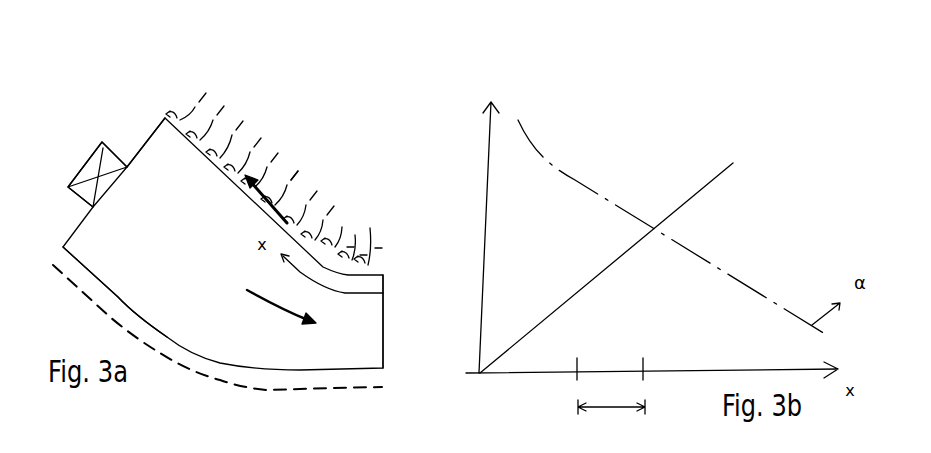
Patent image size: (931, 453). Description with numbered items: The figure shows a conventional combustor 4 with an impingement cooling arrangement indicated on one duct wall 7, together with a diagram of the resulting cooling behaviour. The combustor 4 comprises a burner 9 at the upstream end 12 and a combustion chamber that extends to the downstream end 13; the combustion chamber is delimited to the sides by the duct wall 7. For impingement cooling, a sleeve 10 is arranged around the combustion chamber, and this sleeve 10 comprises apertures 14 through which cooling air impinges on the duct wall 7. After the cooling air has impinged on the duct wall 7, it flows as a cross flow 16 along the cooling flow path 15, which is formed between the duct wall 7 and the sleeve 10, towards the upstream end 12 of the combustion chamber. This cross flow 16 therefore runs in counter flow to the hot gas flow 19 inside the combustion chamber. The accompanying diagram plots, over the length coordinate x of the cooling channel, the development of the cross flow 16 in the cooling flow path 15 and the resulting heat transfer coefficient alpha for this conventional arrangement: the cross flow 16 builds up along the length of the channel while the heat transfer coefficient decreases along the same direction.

In FIG. 3A, the combustor 4 is at (200, 264).
In FIG. 3A, the duct wall 7 is at (118, 295).
In FIG. 3A, the burner 9 is at (110, 143).
In FIG. 3A, the sleeve 10 is at (111, 317).
In FIG. 3A, the upstream end 12 is at (139, 151).
In FIG. 3A, the downstream end 13 is at (384, 311).
In FIG. 3A, the apertures 14 is at (222, 150).
In FIG. 3A, the cooling flow path 15 is at (293, 193).
In FIG. 3A, the cross flow 16 is at (257, 199).
In FIG. 3B, the cross flow 16 is at (692, 205).
In FIG. 3A, the hot gas flow 19 is at (274, 307).